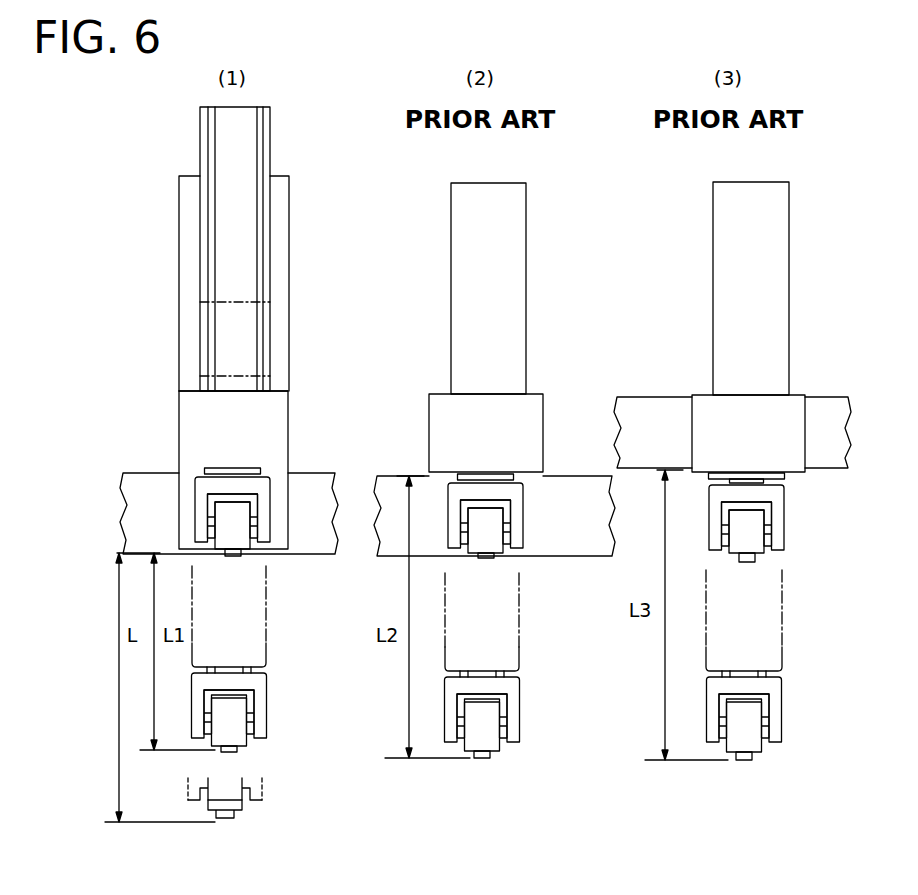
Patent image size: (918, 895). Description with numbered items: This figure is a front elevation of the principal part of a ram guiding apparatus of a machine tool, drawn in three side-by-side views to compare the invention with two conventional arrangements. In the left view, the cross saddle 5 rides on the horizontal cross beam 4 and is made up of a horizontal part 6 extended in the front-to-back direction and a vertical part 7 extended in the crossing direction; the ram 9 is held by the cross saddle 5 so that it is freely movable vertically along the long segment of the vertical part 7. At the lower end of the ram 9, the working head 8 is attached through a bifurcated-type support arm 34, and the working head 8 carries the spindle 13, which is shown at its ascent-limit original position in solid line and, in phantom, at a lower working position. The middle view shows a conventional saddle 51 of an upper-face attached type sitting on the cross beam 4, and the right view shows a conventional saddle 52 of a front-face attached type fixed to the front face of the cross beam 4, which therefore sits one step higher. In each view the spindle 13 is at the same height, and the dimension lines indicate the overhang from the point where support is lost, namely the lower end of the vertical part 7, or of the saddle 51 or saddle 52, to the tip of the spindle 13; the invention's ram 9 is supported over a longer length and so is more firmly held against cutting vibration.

The cross beam 4 is at (142, 473).
The cross saddle 5 is at (288, 397).
The horizontal part 6 is at (183, 406).
The vertical part 7 is at (182, 271).
The working head 8 is at (240, 534).
The ram 9 is at (270, 232).
The spindle 13 is at (237, 558).
The bifurcated-type support arm 34 is at (270, 498).
The conventional saddle of an upper-face attached type 51 is at (429, 409).
The conventional saddle of a front-face attached type 52 is at (692, 413).